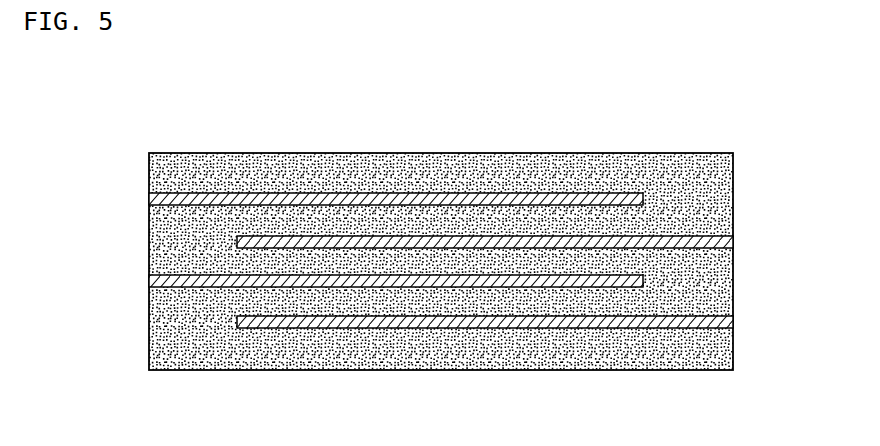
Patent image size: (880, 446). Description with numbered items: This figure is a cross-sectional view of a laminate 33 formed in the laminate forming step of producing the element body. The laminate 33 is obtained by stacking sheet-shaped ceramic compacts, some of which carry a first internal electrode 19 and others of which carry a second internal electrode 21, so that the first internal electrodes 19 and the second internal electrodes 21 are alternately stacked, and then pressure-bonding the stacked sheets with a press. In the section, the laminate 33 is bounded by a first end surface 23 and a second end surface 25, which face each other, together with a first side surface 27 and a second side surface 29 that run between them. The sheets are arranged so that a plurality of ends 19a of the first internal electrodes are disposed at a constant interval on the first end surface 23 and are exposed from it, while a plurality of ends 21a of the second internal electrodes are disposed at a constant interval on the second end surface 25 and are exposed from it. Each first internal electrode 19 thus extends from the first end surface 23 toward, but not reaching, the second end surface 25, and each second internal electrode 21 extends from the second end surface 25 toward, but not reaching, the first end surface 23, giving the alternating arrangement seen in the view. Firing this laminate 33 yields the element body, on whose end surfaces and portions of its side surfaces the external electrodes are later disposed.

The laminate 33 is at (600, 153).
The first side surface 27 is at (668, 153).
The second end surface 25 is at (733, 192).
The first end surface 23 is at (149, 335).
The second side surface 29 is at (668, 371).
The first internal electrode 19 is at (203, 276).
The end of first internal electrode 19a is at (149, 200).
The second internal electrode 21 is at (678, 248).
The end of second internal electrode 21a is at (733, 240).